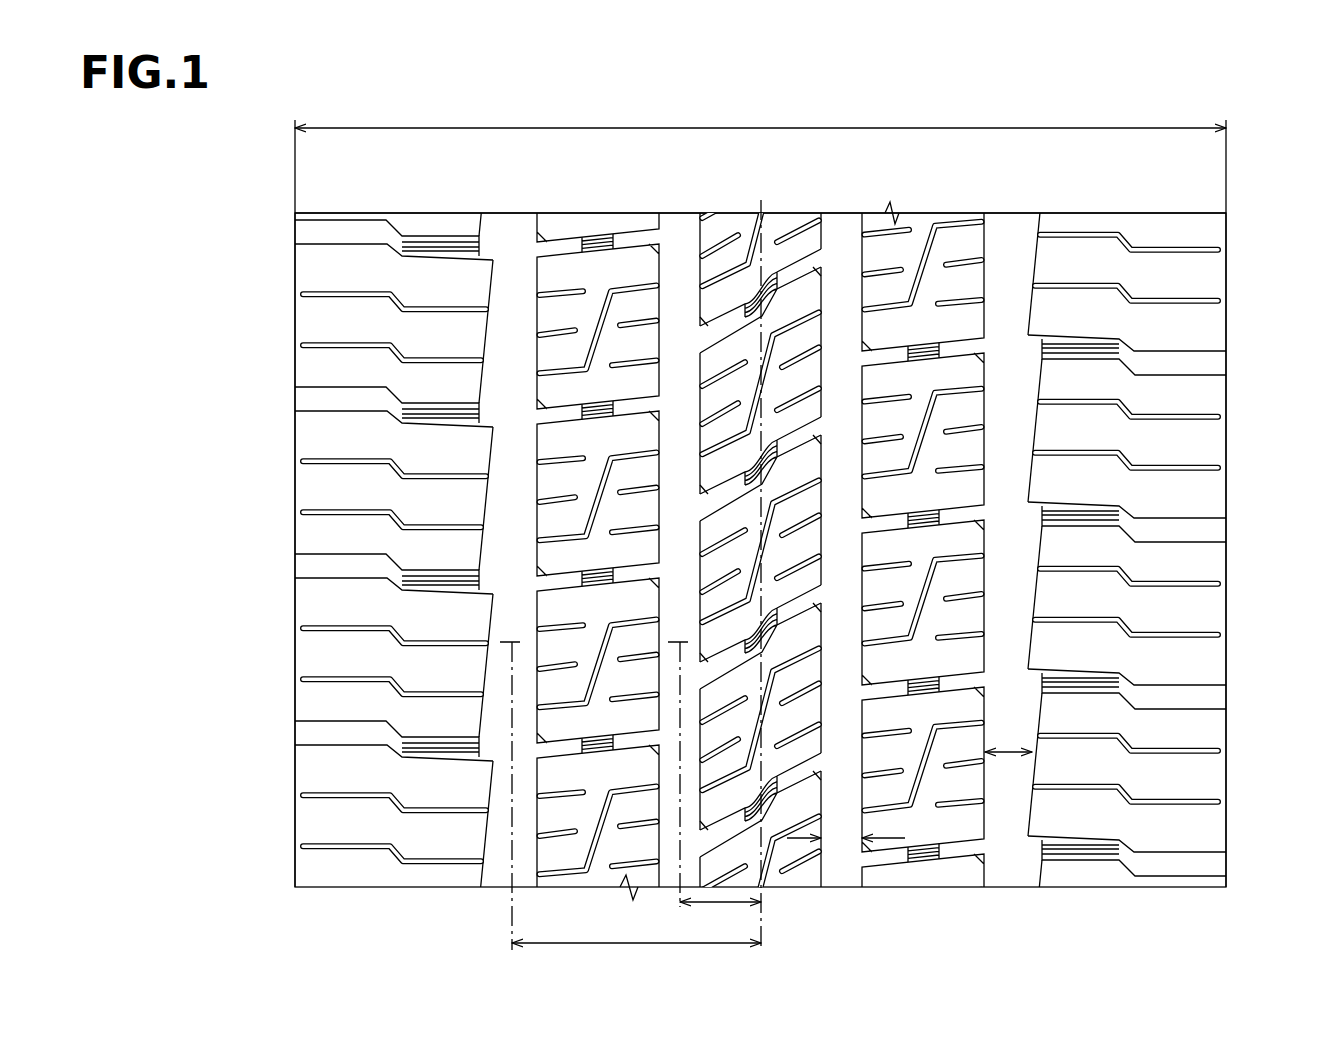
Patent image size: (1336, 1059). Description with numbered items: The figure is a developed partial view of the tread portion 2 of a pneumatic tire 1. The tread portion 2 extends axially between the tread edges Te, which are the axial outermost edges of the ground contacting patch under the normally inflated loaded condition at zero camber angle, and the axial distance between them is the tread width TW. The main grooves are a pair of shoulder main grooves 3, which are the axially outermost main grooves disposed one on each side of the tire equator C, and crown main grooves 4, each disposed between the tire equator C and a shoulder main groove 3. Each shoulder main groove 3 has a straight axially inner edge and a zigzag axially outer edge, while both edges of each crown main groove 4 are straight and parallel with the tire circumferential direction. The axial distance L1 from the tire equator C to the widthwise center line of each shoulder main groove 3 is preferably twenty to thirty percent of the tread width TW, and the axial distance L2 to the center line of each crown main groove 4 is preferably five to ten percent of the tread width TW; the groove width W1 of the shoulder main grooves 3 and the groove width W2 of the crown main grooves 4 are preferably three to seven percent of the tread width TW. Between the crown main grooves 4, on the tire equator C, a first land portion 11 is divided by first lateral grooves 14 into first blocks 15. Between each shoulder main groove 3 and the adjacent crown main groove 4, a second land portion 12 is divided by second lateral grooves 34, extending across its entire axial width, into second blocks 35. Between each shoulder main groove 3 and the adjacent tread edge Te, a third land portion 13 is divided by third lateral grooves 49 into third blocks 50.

The pneumatic tire 1 is at (962, 210).
The tread portion 2 is at (790, 210).
The shoulder main groove 3 is at (515, 278).
The crown main groove 4 is at (680, 262).
The first land portion 11 is at (726, 263).
The second land portion 12 is at (595, 278).
The third land portion 13 is at (394, 280).
The first lateral groove 14 is at (795, 440).
The first block 15 is at (770, 555).
The second lateral groove 34 is at (565, 417).
The second block 35 is at (583, 490).
The third lateral groove 49 is at (355, 571).
The third block 50 is at (388, 664).
The tire equator C is at (760, 558).
The tread edge Te is at (295, 268).
The tread width TW is at (760, 155).
The axial distance from tire equator to shoulder main groove center line L1 is at (636, 961).
The axial distance from tire equator to crown main groove center line L2 is at (720, 920).
The groove width of shoulder main groove W1 is at (1012, 750).
The groove width of crown main groove W2 is at (843, 842).